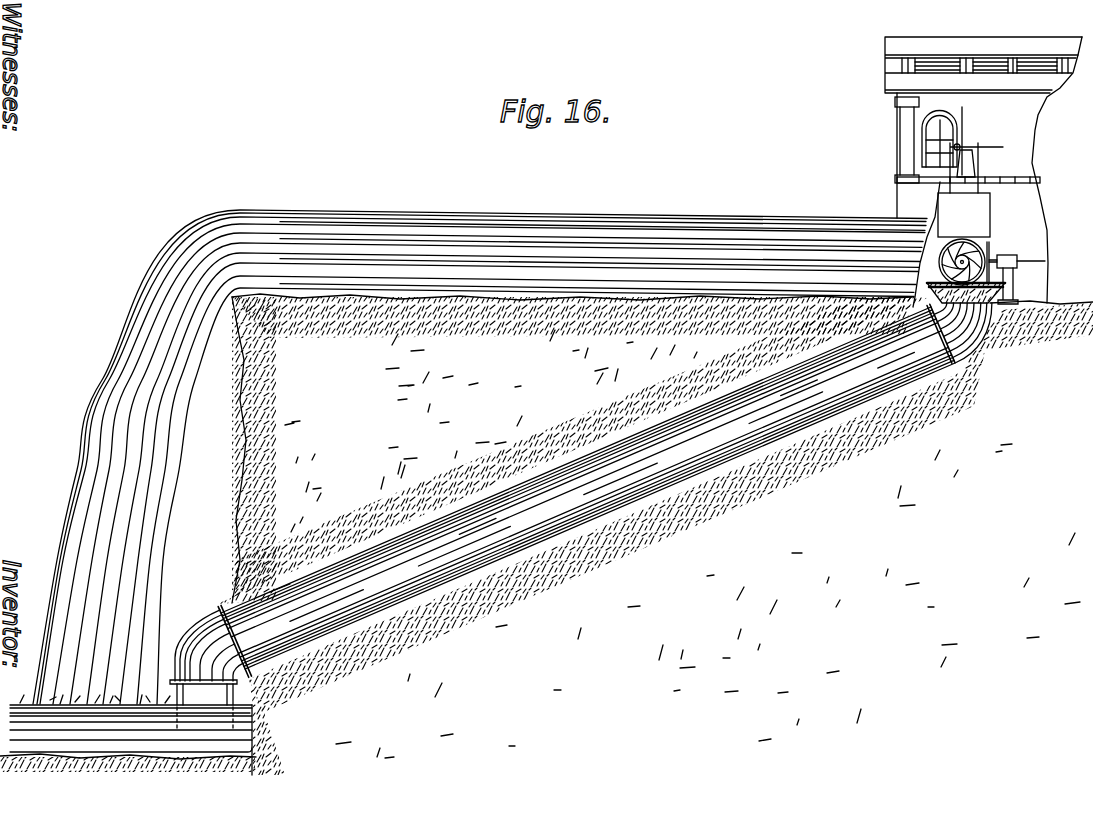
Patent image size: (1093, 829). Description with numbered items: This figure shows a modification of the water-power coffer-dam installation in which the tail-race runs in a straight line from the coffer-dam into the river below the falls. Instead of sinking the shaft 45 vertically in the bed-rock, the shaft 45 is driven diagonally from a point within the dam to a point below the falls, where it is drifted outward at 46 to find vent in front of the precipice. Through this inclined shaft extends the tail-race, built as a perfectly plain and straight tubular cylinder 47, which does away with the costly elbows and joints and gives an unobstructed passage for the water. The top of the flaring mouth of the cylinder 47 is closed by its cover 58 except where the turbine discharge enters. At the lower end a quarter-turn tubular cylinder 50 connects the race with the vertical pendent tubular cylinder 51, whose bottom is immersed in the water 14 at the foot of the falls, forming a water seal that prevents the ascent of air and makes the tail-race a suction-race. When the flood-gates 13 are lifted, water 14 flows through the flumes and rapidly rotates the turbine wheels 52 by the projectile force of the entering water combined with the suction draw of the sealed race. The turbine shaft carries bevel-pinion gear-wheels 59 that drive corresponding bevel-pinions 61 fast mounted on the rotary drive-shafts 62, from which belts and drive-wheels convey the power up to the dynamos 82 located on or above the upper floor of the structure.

The flood-gates 13 is at (983, 137).
The water 14 is at (468, 481).
The shaft 45 is at (953, 331).
The horizontal drift of the shaft 46 is at (276, 586).
The tubular cylinder 47 is at (432, 556).
The second quarter-turn tubular cylinder 50 is at (213, 643).
The vertical pendent tubular cylinder 51 is at (203, 705).
The turbine wheels 52 is at (962, 253).
The cover 58 is at (968, 285).
The bevel-pinion gear-wheels 59 is at (992, 238).
The bevel-pinions 61 is at (999, 252).
The rotary drive-shafts 62 is at (1021, 273).
The dynamos 82 is at (979, 168).